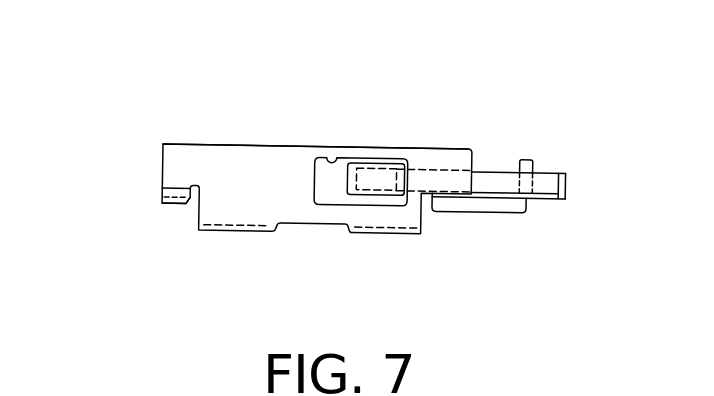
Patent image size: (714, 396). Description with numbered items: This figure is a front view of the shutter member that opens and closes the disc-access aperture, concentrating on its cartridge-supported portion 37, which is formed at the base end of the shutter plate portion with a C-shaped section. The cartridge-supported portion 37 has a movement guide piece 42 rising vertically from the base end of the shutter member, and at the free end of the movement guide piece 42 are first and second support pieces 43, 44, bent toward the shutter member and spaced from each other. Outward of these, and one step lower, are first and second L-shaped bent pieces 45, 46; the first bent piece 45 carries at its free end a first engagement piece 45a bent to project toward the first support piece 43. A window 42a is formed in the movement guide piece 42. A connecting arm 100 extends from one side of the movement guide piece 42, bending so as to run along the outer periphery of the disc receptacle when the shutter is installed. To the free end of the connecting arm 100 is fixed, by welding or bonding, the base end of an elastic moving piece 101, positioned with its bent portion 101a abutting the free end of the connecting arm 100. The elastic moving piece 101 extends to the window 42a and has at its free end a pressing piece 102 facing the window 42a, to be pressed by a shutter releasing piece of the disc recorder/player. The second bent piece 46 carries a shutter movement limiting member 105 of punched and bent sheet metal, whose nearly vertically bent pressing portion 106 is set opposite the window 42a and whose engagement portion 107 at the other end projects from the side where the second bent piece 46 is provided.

The cartridge-supported portion 37 is at (272, 163).
The movement guide piece 42 is at (227, 162).
The window 42a is at (333, 163).
The first support piece 43 is at (247, 233).
The second support piece 44 is at (383, 233).
The first bent piece 45 is at (175, 188).
The first engagement piece 45a is at (162, 203).
The second bent piece 46 is at (552, 200).
The connecting arm 100 is at (504, 177).
The elastic moving piece 101 is at (432, 165).
The bent portion 101a is at (568, 183).
The pressing piece 102 is at (380, 178).
The shutter movement limiting member 105 is at (488, 202).
The pressing portion 106 is at (349, 163).
The engagement portion 107 is at (530, 158).